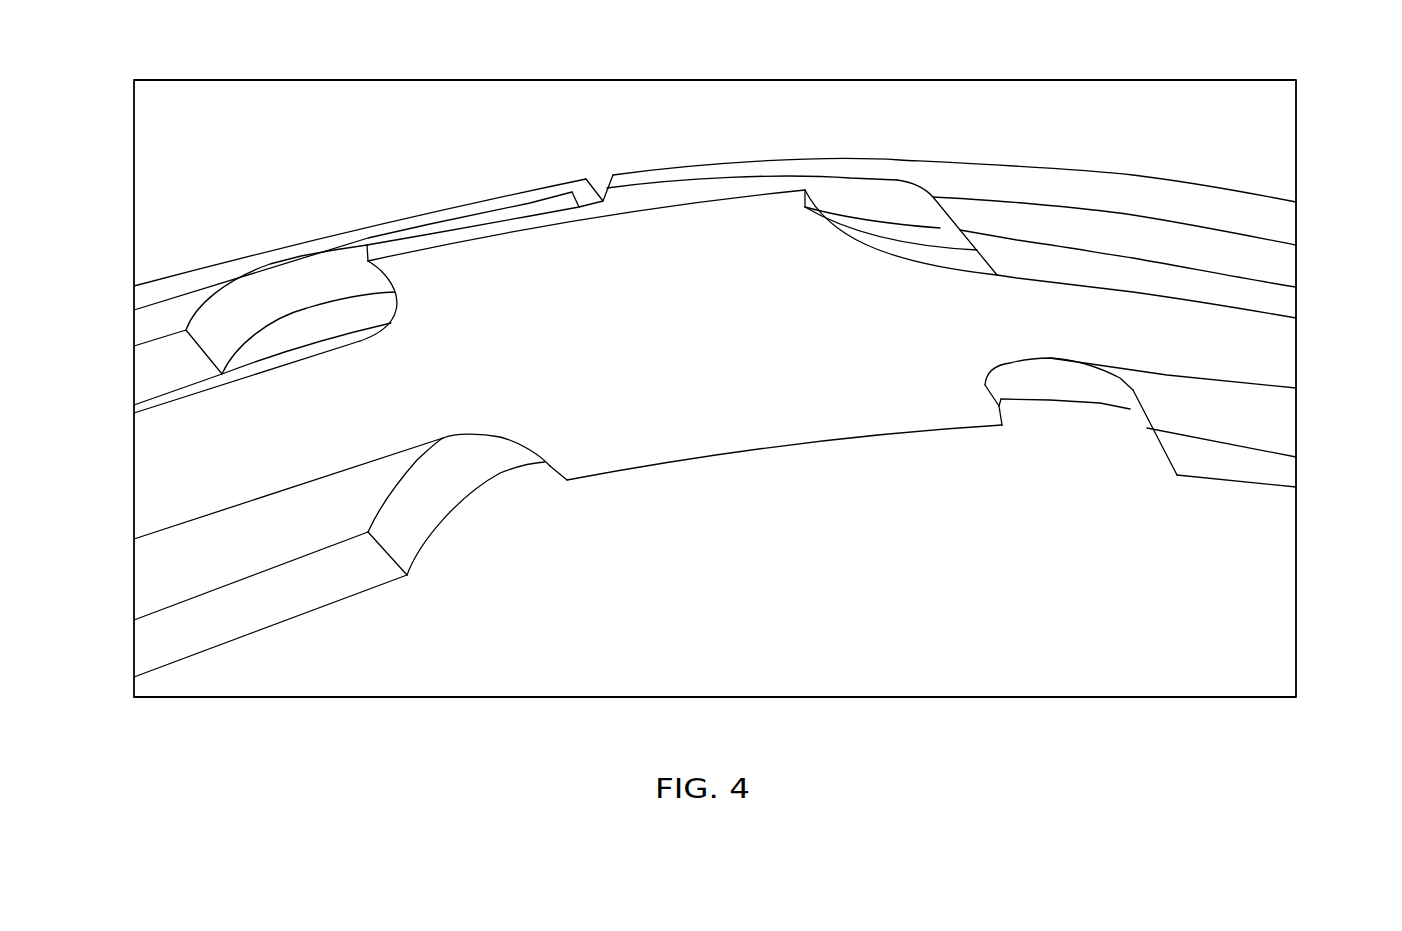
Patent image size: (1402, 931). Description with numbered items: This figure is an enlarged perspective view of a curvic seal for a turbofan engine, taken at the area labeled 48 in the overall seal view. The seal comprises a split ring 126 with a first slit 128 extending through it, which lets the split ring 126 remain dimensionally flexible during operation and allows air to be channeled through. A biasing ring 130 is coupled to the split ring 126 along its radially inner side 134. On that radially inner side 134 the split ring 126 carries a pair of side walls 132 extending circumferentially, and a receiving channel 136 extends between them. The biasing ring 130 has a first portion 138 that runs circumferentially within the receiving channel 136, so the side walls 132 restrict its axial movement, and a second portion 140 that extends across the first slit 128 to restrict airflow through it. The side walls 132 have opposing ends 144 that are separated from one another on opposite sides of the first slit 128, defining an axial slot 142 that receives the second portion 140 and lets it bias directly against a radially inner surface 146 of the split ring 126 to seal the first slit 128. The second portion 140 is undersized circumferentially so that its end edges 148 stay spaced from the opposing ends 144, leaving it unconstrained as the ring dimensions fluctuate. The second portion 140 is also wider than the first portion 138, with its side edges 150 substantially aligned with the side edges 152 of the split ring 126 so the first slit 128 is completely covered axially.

The seal segment 48 is at (830, 200).
The split ring 126 is at (1137, 175).
The first slit 128 is at (607, 161).
The biasing ring 130 is at (952, 481).
The side walls 132 is at (170, 317).
The radially inner side 134 is at (792, 578).
The receiving channel 136 is at (374, 481).
The first portion 138 is at (134, 441).
The second portion 140 is at (540, 252).
The axial slot 142 is at (886, 192).
The opposing ends 144 is at (245, 286).
The radially inner surface 146 is at (339, 263).
The end edges 148 is at (372, 266).
The side edges 150 is at (708, 202).
The side edges 152 is at (560, 188).